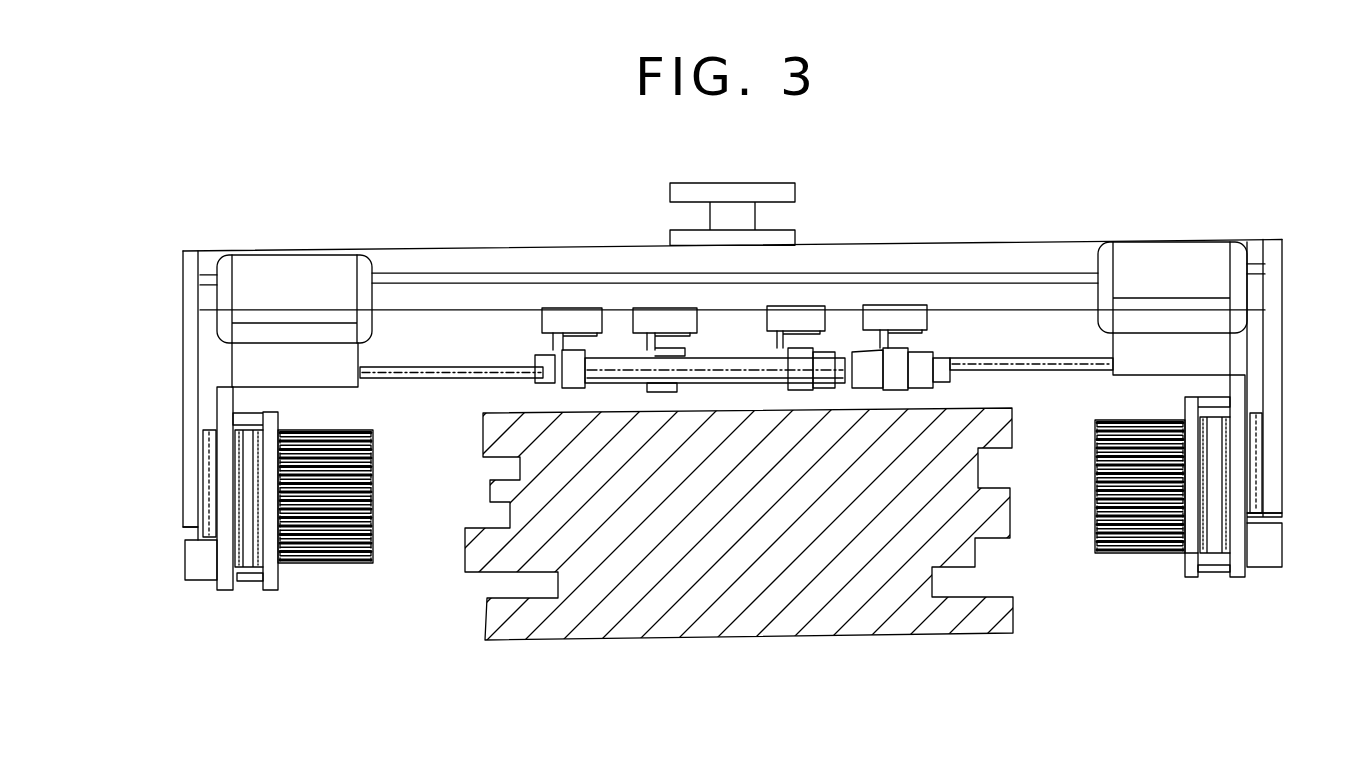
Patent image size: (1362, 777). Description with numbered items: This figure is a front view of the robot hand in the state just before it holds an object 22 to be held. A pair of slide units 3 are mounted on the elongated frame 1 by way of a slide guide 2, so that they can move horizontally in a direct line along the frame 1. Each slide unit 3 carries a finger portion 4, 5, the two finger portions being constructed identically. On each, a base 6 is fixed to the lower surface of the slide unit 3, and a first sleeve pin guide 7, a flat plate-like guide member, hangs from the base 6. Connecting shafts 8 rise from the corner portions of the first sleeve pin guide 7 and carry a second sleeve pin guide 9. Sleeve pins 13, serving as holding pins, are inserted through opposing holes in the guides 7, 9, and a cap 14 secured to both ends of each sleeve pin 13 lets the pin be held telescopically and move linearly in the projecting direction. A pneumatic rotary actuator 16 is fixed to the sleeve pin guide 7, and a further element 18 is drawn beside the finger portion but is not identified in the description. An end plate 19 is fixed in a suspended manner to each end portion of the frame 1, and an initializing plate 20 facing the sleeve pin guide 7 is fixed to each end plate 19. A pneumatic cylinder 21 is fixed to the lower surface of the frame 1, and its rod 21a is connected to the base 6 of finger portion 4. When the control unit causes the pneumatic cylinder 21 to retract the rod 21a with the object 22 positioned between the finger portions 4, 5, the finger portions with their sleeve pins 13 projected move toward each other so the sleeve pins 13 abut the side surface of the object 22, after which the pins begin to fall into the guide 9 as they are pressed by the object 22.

The frame 1 is at (596, 247).
The slide guide 2 is at (478, 272).
The slide unit 3 is at (290, 255).
The finger portion 4 is at (178, 598).
The finger portion 5 is at (1177, 587).
The base 6 is at (360, 355).
The first sleeve pin guide 7 is at (228, 592).
The connecting shaft 8 is at (250, 413).
The second sleeve pin guide 9 is at (1185, 567).
The sleeve pin 13 is at (365, 565).
The cap 14 is at (375, 546).
The pneumatic rotary actuator 16 is at (185, 560).
The guide strip 18 is at (265, 425).
The end plate 19 is at (185, 332).
The initializing plate 20 is at (198, 532).
The pneumatic cylinder 21 is at (712, 352).
The rod 21a is at (470, 367).
The object to be held 22 is at (663, 640).